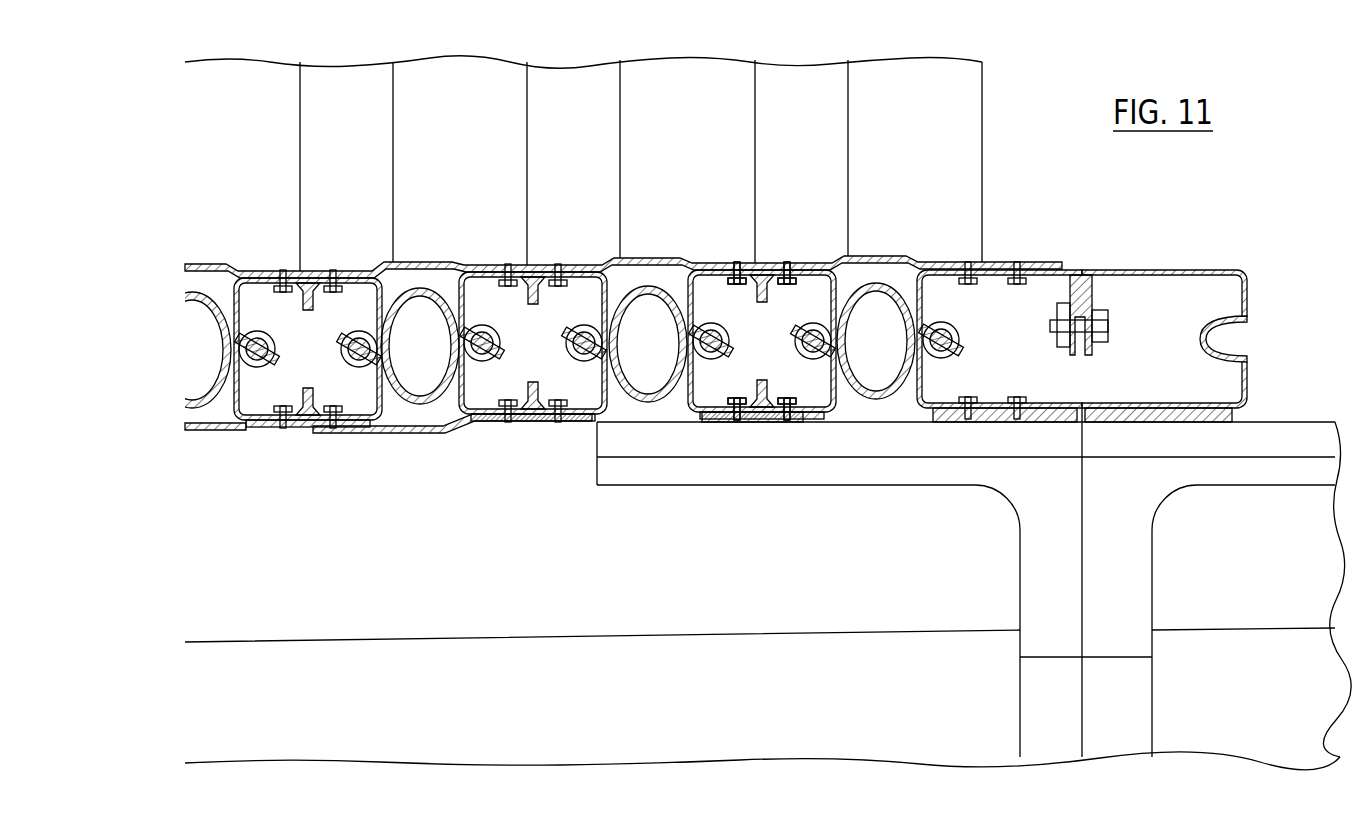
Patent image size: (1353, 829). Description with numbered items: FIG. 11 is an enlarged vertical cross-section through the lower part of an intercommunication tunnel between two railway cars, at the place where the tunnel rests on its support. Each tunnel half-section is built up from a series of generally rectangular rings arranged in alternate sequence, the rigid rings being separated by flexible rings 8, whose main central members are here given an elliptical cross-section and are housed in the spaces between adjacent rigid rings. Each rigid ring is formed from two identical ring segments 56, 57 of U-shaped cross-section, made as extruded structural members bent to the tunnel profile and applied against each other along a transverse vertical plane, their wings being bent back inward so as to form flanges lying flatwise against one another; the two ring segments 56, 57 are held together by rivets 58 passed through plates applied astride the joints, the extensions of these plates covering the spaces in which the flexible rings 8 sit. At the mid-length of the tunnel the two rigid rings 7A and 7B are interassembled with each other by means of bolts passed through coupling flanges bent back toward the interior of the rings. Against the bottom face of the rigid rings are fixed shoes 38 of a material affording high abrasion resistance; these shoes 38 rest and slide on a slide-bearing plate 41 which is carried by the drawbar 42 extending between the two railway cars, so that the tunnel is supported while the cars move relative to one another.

The rigid ring 7A is at (1057, 256).
The rigid ring 7B is at (1170, 256).
The flexible ring 8 is at (648, 288).
The shoe 38 is at (946, 417).
The slide-bearing plate 41 is at (1277, 437).
The drawbar 42 is at (572, 660).
The ring segment 56 is at (590, 421).
The ring segment 57 is at (488, 264).
The rivet 58 is at (783, 269).